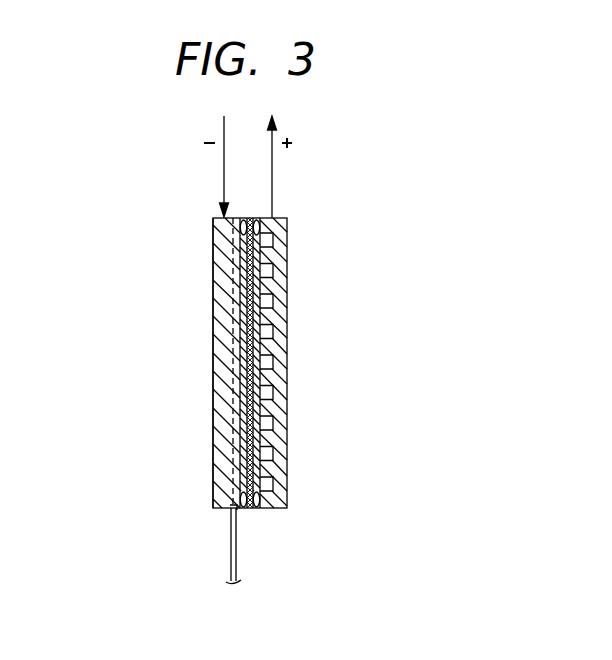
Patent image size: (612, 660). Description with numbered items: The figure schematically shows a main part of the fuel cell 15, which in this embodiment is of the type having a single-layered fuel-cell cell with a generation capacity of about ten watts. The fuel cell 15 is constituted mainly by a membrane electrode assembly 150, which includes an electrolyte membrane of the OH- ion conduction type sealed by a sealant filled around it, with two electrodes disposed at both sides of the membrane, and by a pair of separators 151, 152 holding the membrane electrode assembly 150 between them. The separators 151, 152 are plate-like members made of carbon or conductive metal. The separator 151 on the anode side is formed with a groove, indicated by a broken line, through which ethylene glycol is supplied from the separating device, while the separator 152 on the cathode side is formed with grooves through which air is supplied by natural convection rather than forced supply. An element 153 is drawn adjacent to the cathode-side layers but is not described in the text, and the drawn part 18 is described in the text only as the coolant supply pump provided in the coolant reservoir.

The fuel cell 15 is at (297, 264).
The membrane electrode assembly (MEA) 150 is at (258, 358).
The separator 151 is at (213, 405).
The separator 152 is at (287, 427).
The current collector layer 153 is at (262, 508).
The coolant supply pump 18 is at (230, 546).